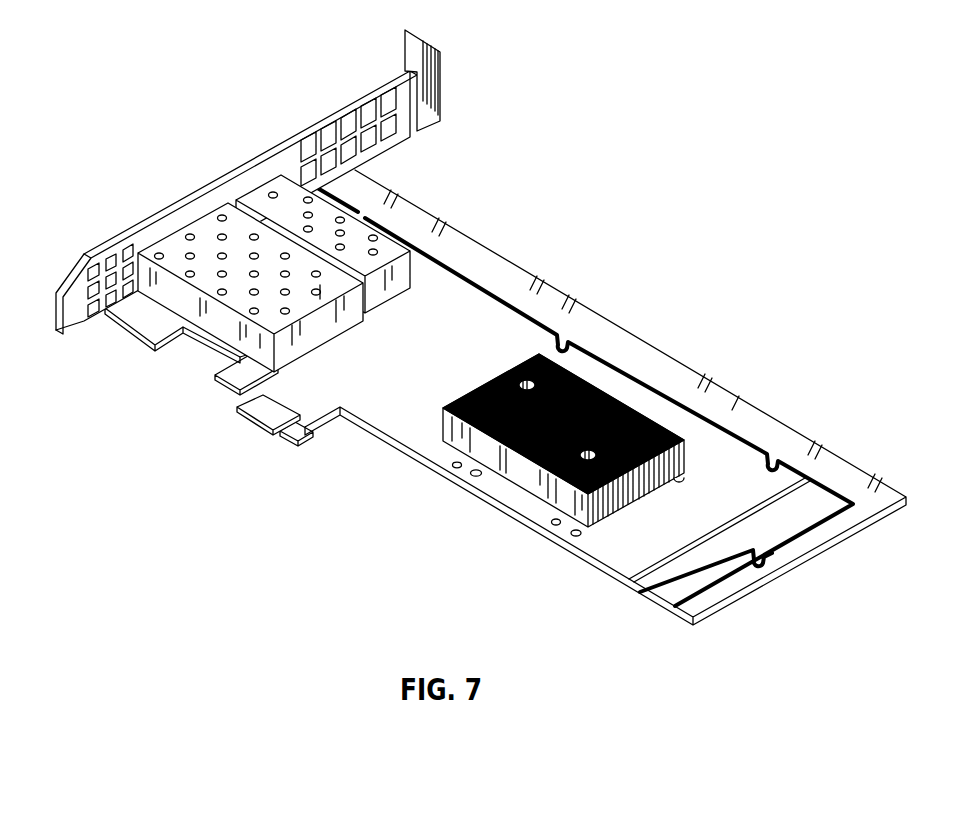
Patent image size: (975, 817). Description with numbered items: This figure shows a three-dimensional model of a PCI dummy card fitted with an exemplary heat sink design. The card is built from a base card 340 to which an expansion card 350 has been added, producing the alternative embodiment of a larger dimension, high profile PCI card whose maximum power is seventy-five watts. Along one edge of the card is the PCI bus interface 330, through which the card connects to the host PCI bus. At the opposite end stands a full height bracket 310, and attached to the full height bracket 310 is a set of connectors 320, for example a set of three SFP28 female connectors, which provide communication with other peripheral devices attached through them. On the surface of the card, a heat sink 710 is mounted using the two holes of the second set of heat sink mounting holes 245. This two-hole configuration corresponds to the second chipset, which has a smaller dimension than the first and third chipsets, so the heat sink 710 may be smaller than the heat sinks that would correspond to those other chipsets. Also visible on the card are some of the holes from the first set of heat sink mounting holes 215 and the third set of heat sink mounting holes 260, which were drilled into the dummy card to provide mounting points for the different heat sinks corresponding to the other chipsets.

The full height bracket 310 is at (433, 100).
The set of connectors 320 is at (270, 197).
The PCI bus interface 330 is at (250, 418).
The base card 340 is at (490, 302).
The expansion card 350 is at (770, 433).
The heat sink 710 is at (622, 400).
The second set of heat sink mounting holes 245 is at (650, 492).
The third set of heat sink mounting holes 260 is at (548, 521).
The first set of heat sink mounting holes 215 is at (572, 537).